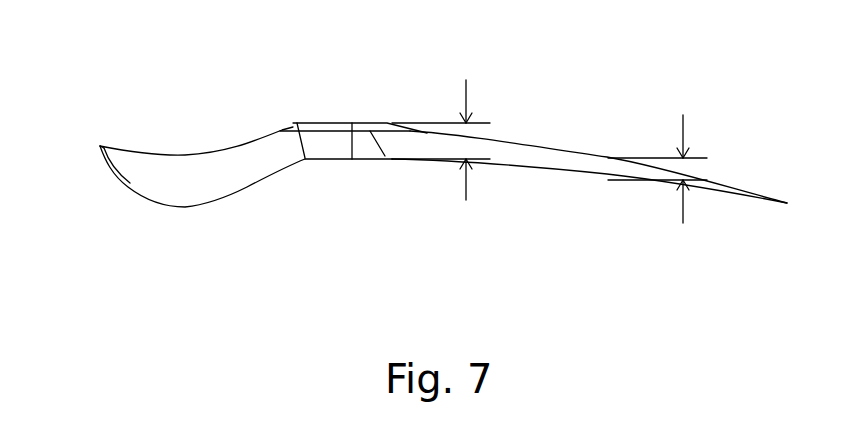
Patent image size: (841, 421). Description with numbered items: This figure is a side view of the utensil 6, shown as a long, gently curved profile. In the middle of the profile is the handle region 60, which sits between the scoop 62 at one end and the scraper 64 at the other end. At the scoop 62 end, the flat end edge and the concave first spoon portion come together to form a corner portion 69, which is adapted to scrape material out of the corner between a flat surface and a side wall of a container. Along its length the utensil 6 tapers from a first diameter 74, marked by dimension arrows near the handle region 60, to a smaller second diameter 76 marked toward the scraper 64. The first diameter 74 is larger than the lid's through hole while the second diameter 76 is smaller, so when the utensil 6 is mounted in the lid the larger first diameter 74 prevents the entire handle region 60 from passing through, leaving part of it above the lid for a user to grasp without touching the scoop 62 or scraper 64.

The utensil 6 is at (128, 65).
The handle region 60 is at (309, 106).
The scoop 62 is at (182, 132).
The scraper 64 is at (597, 218).
The corner portion 69 is at (95, 138).
The first diameter 74 is at (466, 200).
The second diameter 76 is at (683, 223).